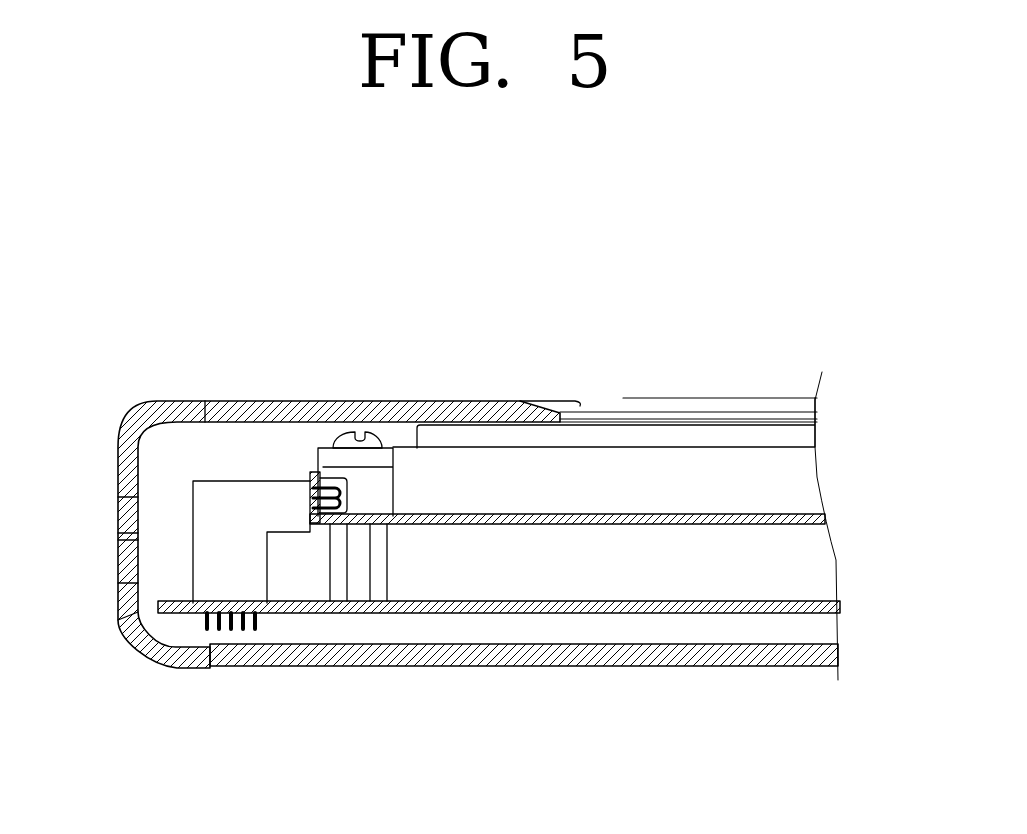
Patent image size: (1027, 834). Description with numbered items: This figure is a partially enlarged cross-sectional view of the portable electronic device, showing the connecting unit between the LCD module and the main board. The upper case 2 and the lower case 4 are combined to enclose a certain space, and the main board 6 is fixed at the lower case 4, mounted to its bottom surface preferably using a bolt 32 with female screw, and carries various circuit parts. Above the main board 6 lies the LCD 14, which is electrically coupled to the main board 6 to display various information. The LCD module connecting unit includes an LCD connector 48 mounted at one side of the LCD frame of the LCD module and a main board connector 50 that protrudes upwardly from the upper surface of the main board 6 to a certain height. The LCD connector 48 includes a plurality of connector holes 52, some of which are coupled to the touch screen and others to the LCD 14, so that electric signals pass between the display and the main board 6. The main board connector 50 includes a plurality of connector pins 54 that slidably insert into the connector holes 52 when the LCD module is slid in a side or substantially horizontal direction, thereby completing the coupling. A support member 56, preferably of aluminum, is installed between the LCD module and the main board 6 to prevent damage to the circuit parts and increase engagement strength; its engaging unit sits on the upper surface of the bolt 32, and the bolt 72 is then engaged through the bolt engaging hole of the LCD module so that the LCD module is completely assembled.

The upper case 2 is at (228, 403).
The lower case 4 is at (725, 666).
The main board 6 is at (625, 613).
The LCD 14 is at (613, 460).
The bolt with female screw 32 is at (388, 563).
The LCD connector 48 is at (385, 495).
The main board connector 50 is at (217, 555).
The connector holes 52 is at (321, 516).
The connector pins 54 is at (315, 507).
The support member 56 is at (710, 517).
The bolt 72 is at (368, 425).